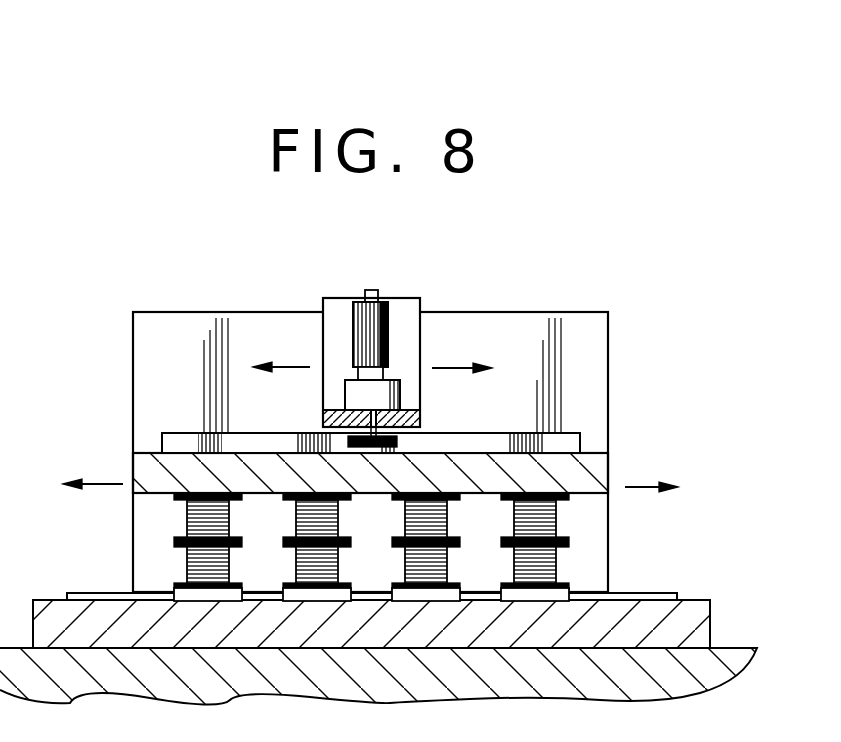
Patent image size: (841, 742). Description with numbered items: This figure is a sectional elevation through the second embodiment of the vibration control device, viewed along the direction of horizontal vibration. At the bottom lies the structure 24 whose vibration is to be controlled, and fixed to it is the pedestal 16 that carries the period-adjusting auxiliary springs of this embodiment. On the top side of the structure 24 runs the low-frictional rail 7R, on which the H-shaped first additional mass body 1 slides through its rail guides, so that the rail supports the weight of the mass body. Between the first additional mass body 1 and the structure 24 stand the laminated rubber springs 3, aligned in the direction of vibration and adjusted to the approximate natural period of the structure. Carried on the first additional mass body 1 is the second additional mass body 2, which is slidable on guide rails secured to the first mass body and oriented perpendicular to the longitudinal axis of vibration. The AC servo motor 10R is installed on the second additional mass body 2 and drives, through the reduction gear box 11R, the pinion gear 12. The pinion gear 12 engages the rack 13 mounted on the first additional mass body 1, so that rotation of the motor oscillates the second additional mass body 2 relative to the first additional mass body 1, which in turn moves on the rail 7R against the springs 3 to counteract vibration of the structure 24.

The first additional mass body 1 is at (585, 357).
The second additional mass body 2 is at (403, 312).
The springs 3 is at (187, 568).
The rail 7R is at (82, 593).
The AC servo motor 10R is at (350, 306).
The reduction gear box 11R is at (344, 388).
The pinion gear 12 is at (366, 448).
The rack 13 is at (530, 436).
The pedestal 16 is at (690, 622).
The structure 24 is at (407, 688).